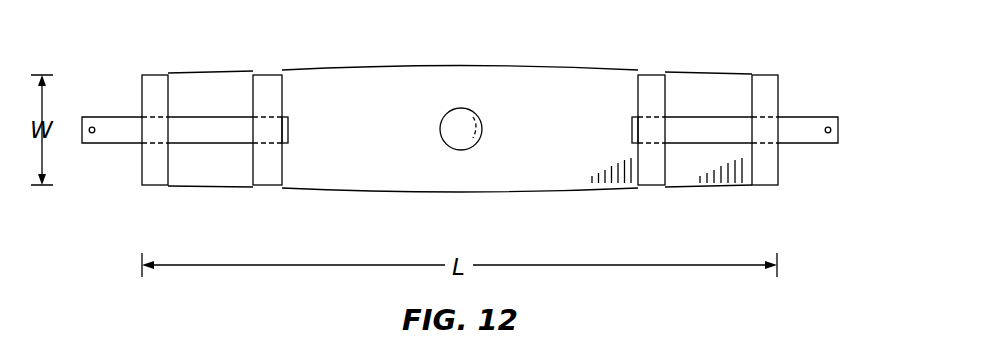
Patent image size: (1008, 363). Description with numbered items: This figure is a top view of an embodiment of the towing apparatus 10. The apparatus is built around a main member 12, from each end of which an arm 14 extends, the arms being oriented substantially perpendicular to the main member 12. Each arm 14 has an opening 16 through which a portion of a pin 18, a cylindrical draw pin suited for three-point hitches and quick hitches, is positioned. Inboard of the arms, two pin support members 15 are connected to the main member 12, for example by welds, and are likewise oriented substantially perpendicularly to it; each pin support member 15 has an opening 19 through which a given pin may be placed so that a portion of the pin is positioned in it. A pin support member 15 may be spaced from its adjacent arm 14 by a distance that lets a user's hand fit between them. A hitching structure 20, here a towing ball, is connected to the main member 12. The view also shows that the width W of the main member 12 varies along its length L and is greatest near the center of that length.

The towing apparatus 10 is at (712, 48).
The main member 12 is at (562, 176).
The arm 14 is at (157, 176).
The pin support member 15 is at (267, 176).
The opening 16 is at (152, 146).
The pin 18 is at (127, 117).
The opening 19 is at (276, 113).
The hitching structure 20 is at (480, 106).